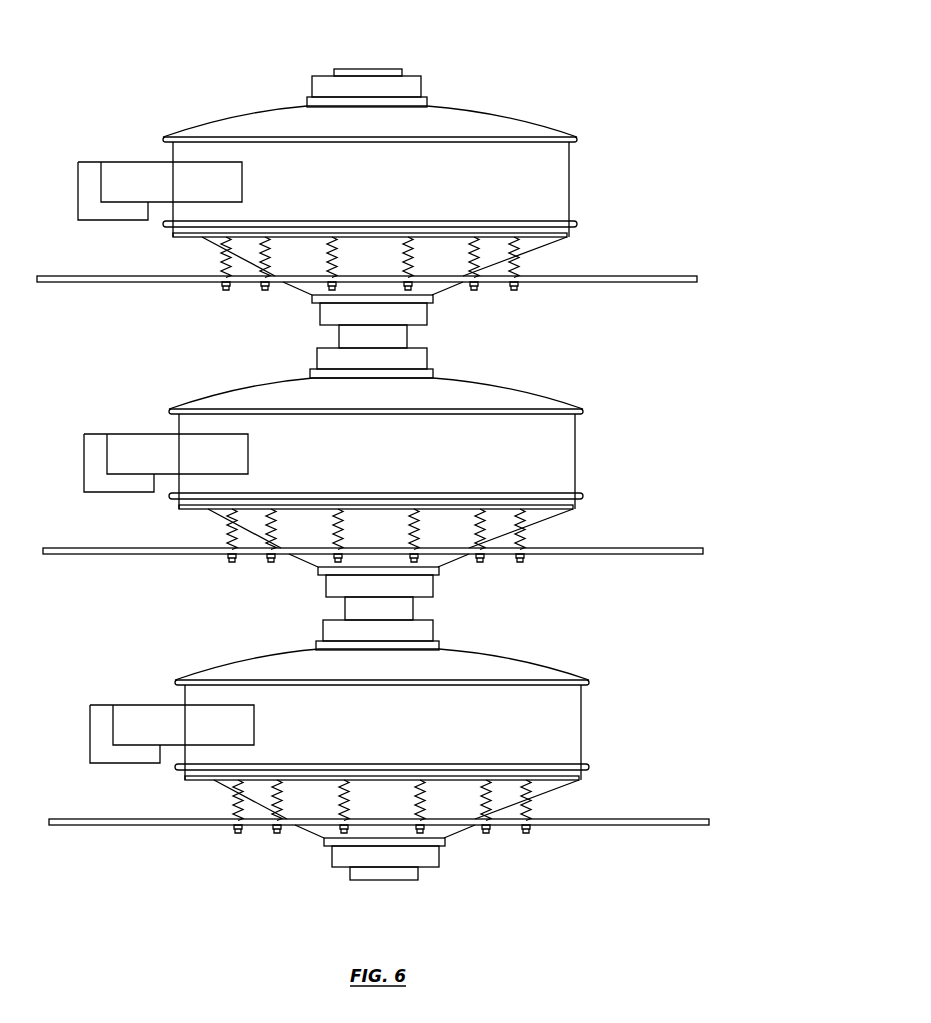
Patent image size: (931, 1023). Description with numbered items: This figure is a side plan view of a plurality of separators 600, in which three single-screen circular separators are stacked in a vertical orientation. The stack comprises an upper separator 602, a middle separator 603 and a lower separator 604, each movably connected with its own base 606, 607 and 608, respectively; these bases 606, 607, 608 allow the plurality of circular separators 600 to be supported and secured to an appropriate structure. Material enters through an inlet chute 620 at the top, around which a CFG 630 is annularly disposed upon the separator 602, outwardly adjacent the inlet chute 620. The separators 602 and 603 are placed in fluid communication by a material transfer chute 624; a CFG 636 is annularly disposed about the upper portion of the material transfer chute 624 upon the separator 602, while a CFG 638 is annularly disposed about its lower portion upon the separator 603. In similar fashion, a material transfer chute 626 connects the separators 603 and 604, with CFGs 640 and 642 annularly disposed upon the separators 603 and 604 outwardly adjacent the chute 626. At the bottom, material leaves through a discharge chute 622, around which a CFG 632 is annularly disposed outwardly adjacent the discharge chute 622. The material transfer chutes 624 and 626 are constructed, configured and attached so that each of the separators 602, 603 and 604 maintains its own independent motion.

The plurality of separators 600 is at (620, 38).
The separator 602 is at (597, 123).
The separator 603 is at (565, 388).
The separator 604 is at (572, 663).
The base 606 is at (627, 270).
The base 607 is at (634, 536).
The base 608 is at (640, 812).
The inlet chute 620 is at (365, 61).
The discharge chute 622 is at (354, 885).
The material transfer chute 624 is at (331, 338).
The material transfer chute 626 is at (340, 607).
The CFG 630 is at (419, 70).
The CFG 632 is at (439, 868).
The CFG 636 is at (425, 318).
The CFG 638 is at (430, 353).
The CFG 640 is at (435, 585).
The CFG 642 is at (439, 620).